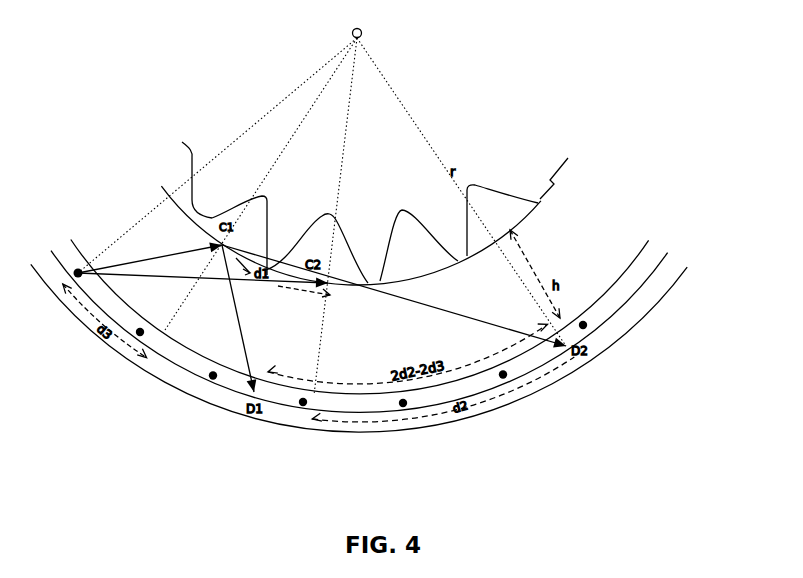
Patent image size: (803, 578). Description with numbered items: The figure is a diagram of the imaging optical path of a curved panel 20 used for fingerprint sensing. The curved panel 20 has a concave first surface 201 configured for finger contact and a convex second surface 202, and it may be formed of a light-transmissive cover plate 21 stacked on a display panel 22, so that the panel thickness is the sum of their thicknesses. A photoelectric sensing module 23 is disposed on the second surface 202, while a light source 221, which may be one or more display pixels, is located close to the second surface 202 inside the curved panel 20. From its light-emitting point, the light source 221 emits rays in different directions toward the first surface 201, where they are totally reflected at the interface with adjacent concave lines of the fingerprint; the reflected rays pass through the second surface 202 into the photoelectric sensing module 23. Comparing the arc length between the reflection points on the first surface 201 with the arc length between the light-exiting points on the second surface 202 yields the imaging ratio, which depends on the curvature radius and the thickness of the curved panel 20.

The curved panel 20 is at (690, 244).
The light-transmissive cover plate 21 is at (617, 217).
The display panel 22 is at (642, 260).
The photoelectric sensing module 23 is at (661, 283).
The first surface 201 is at (538, 202).
The second surface 202 is at (632, 288).
The light source 221 is at (77, 268).